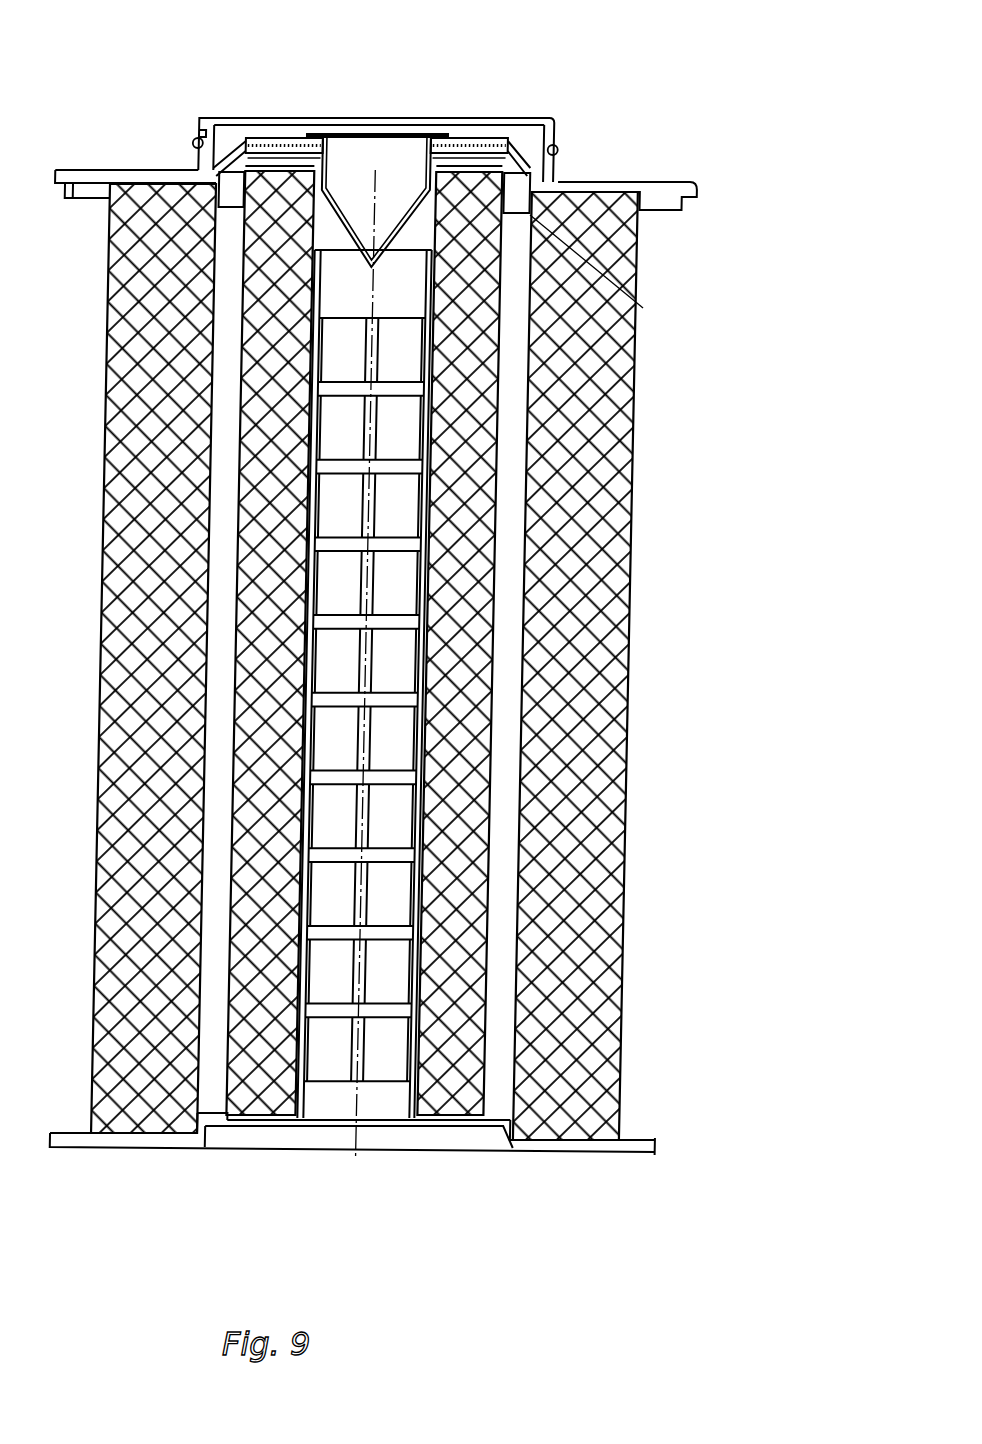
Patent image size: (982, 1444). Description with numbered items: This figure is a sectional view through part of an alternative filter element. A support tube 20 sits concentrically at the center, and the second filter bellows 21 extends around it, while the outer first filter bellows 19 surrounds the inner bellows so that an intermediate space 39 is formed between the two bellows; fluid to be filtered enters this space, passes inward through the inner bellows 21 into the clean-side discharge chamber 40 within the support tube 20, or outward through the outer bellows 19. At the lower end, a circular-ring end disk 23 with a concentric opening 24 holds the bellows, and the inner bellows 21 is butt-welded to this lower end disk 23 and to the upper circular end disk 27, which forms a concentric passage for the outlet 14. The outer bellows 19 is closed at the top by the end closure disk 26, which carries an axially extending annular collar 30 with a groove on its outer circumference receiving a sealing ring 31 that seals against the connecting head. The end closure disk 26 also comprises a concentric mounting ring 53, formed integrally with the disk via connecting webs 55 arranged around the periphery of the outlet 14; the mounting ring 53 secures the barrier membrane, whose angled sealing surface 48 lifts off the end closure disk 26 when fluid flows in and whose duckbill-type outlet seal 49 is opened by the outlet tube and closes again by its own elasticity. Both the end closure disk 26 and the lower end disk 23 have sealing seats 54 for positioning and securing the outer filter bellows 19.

The outlet 14 is at (362, 153).
The first filter bellows 19 is at (642, 628).
The support tube 20 is at (379, 880).
The second filter bellows 21 is at (499, 778).
The end disk 23 is at (666, 1145).
The concentric opening 24 is at (401, 1120).
The end closure disk 26 is at (663, 188).
The end disk 27 is at (267, 148).
The annular collar 30 is at (544, 122).
The sealing ring 31 is at (557, 145).
The intermediate space 39 is at (524, 450).
The discharge chamber 40 is at (356, 513).
The sealing surface 48 is at (530, 180).
The outlet seal 49 is at (380, 262).
The mounting ring 53 is at (466, 142).
The sealing seats 54 is at (213, 176).
The connecting webs 55 is at (247, 142).